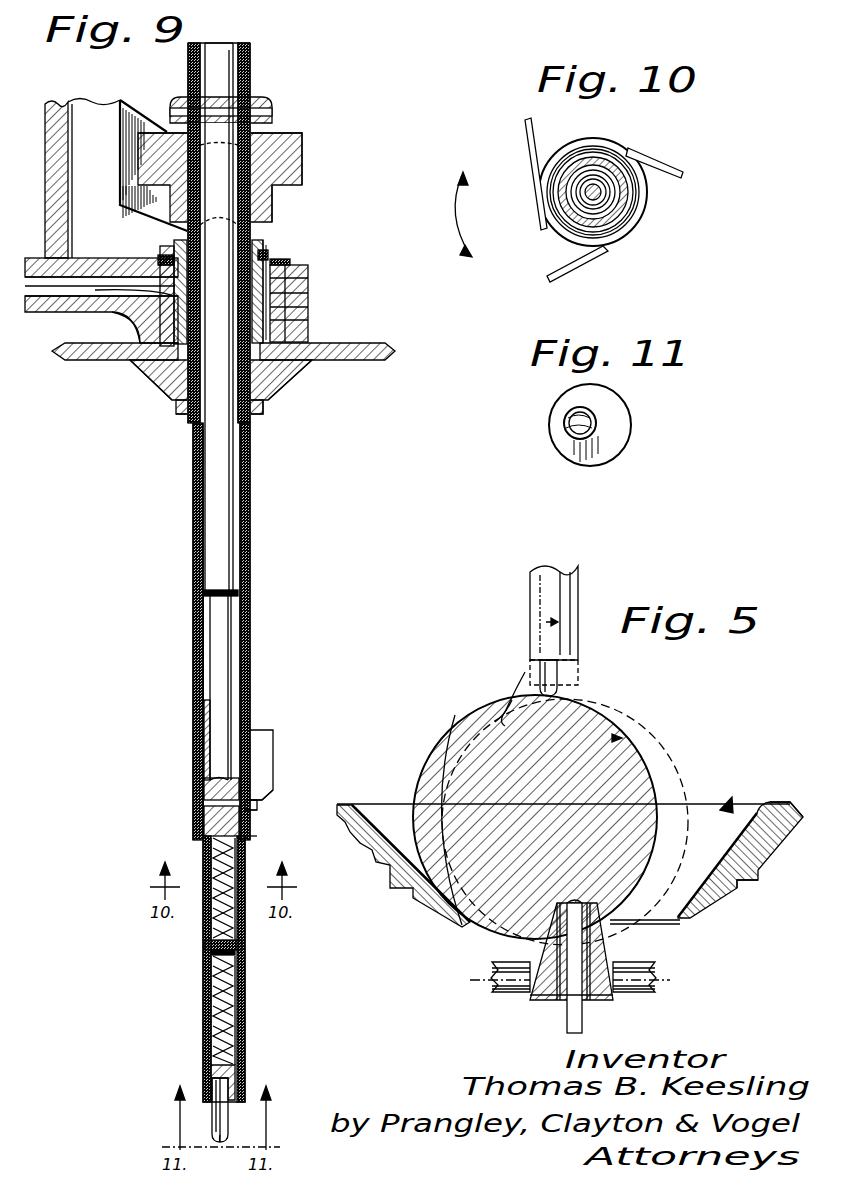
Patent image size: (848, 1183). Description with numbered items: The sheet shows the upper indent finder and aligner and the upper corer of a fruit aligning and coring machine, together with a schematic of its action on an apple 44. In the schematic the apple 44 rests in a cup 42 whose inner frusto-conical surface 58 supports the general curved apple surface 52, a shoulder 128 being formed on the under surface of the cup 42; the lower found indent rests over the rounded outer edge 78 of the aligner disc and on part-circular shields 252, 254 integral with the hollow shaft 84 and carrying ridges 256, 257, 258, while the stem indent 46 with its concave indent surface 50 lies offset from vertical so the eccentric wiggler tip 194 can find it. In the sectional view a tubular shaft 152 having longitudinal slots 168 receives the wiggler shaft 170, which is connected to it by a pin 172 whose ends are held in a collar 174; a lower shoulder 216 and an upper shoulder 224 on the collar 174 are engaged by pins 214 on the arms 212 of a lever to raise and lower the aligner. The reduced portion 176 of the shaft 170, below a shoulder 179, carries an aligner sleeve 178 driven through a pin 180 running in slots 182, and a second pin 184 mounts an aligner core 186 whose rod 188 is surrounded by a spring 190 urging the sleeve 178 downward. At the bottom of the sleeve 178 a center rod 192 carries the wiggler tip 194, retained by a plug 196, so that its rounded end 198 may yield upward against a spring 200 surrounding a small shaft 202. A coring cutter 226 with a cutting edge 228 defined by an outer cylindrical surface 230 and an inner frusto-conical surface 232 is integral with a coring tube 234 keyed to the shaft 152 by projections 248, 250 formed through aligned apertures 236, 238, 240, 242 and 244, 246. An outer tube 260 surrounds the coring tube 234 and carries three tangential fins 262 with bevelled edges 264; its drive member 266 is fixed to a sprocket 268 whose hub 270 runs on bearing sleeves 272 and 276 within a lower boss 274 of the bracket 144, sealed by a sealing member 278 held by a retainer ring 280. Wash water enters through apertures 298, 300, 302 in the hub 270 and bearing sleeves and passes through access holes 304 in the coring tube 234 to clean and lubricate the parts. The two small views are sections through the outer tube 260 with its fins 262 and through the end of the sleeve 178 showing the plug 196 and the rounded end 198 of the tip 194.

In FIG. 5, the cup 42 is at (725, 808).
In FIG. 5, the apple 44 is at (640, 725).
In FIG. 5, the stem indent 46 is at (520, 690).
In FIG. 5, the indent surface 50 is at (492, 712).
In FIG. 5, the curved apple surface 52 is at (650, 780).
In FIG. 5, the inner frusto-conical surface 58 is at (758, 812).
In FIG. 5, the outer edge 78 is at (582, 1015).
In FIG. 5, the hollow shaft 84 is at (640, 975).
In FIG. 5, the shoulder 128 is at (740, 887).
In FIG. 9, the bracket 144 is at (58, 104).
In FIG. 9, the tubular shaft 152 is at (189, 62).
In FIG. 9, the slots 168 is at (250, 48).
In FIG. 9, the wiggler shaft 170 is at (222, 95).
In FIG. 9, the pin 172 is at (272, 110).
In FIG. 9, the collar 174 is at (302, 150).
In FIG. 9, the reduced diameter portion 176 is at (226, 656).
In FIG. 10, the reduced diameter portion 176 is at (612, 190).
In FIG. 9, the aligner sleeve 178 is at (245, 930).
In FIG. 10, the aligner sleeve 178 is at (598, 155).
In FIG. 5, the aligner sleeve 178 is at (578, 628).
In FIG. 9, the shoulder 179 is at (244, 601).
In FIG. 9, the pin 180 is at (190, 805).
In FIG. 9, the slots 182 is at (195, 826).
In FIG. 9, the second pin 184 is at (204, 948).
In FIG. 9, the aligner core 186 is at (204, 960).
In FIG. 9, the rod 188 is at (210, 870).
In FIG. 10, the rod 188 is at (620, 200).
In FIG. 9, the spring 190 is at (212, 922).
In FIG. 10, the spring 190 is at (610, 200).
In FIG. 9, the center rod 192 is at (204, 1068).
In FIG. 9, the wiggler tip 194 is at (230, 1110).
In FIG. 5, the wiggler tip 194 is at (540, 668).
In FIG. 9, the plug 196 is at (230, 1100).
In FIG. 11, the plug 196 is at (600, 420).
In FIG. 9, the rounded end 198 is at (236, 1147).
In FIG. 11, the rounded end 198 is at (582, 426).
In FIG. 9, the spring 200 is at (245, 978).
In FIG. 9, the small shaft 202 is at (204, 992).
In FIG. 9, the arms 212 is at (132, 125).
In FIG. 9, the pins 214 is at (302, 172).
In FIG. 9, the shoulder 216 is at (272, 200).
In FIG. 9, the upper shoulder 224 is at (272, 114).
In FIG. 9, the coring cutter 226 is at (258, 802).
In FIG. 9, the cutting edge 228 is at (252, 812).
In FIG. 10, the cutting edge 228 is at (552, 222).
In FIG. 9, the outer cylindrical surface 230 is at (257, 805).
In FIG. 9, the inner frusto-conical surface 232 is at (248, 838).
In FIG. 10, the inner frusto-conical surface 232 is at (548, 200).
In FIG. 9, the coring tube 234 is at (203, 735).
In FIG. 9, the aperture 236 is at (264, 248).
In FIG. 9, the aperture 238 is at (182, 250).
In FIG. 9, the aperture 240 is at (308, 312).
In FIG. 9, the aperture 242 is at (168, 388).
In FIG. 9, the aperture 244 is at (108, 360).
In FIG. 9, the aperture 246 is at (282, 380).
In FIG. 9, the projection 248 is at (308, 280).
In FIG. 9, the projection 250 is at (150, 375).
In FIG. 5, the shield 252 is at (615, 935).
In FIG. 5, the shield 254 is at (540, 952).
In FIG. 5, the ridge 256 is at (618, 986).
In FIG. 5, the ridge 257 is at (615, 1000).
In FIG. 5, the ridge 258 is at (600, 952).
In FIG. 9, the outer tube 260 is at (202, 658).
In FIG. 9, the fins 262 is at (262, 748).
In FIG. 10, the fins 262 is at (525, 130).
In FIG. 9, the bevelled edge 264 is at (268, 795).
In FIG. 9, the drive member 266 is at (280, 395).
In FIG. 9, the drive sprocket 268 is at (380, 355).
In FIG. 9, the hub 270 is at (308, 296).
In FIG. 9, the bearing sleeve 272 is at (308, 328).
In FIG. 9, the lower boss 274 is at (290, 265).
In FIG. 9, the bearing sleeve 276 is at (290, 270).
In FIG. 9, the sealing member 278 is at (160, 262).
In FIG. 9, the retainer ring 280 is at (158, 258).
In FIG. 9, the aperture 298 is at (100, 290).
In FIG. 9, the aperture 300 is at (118, 292).
In FIG. 9, the aperture 302 is at (140, 318).
In FIG. 9, the access holes 304 is at (200, 520).